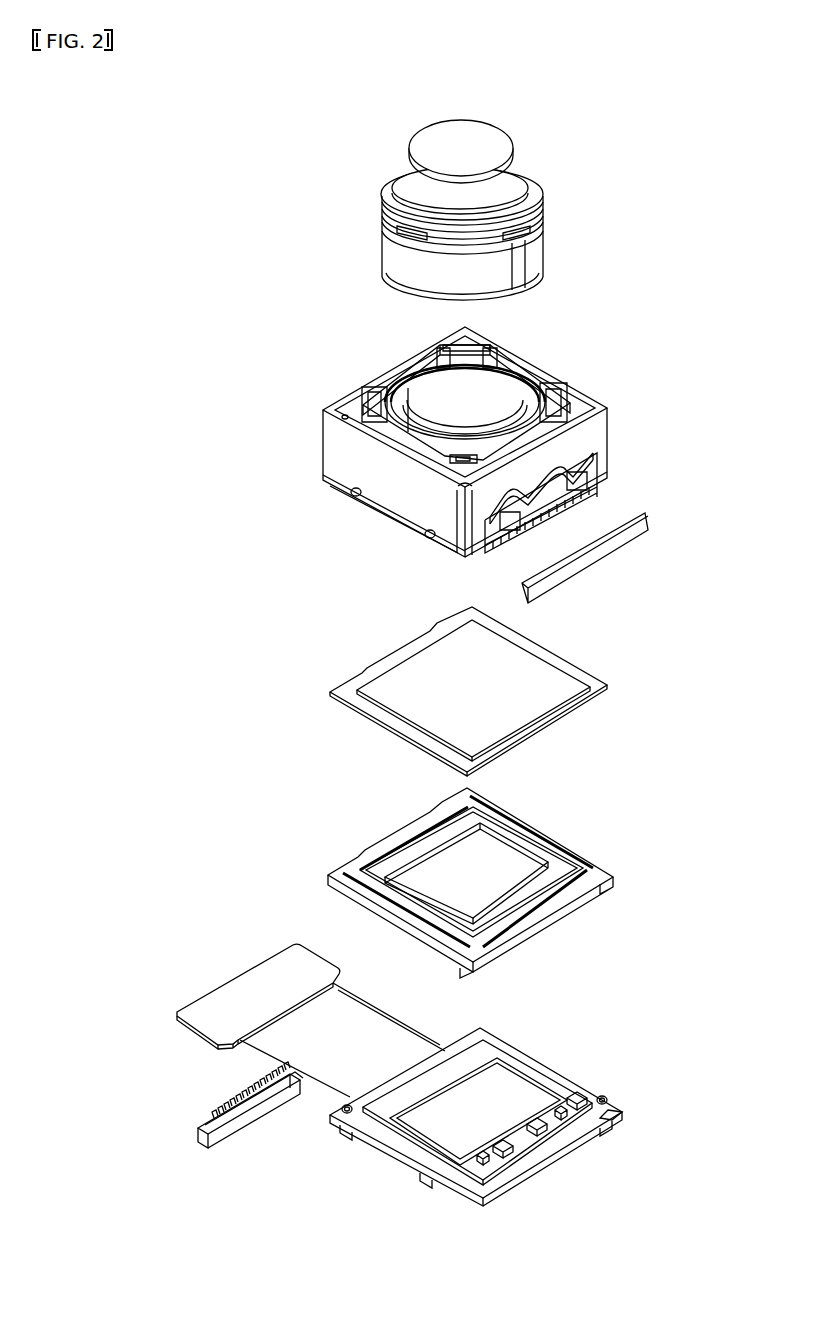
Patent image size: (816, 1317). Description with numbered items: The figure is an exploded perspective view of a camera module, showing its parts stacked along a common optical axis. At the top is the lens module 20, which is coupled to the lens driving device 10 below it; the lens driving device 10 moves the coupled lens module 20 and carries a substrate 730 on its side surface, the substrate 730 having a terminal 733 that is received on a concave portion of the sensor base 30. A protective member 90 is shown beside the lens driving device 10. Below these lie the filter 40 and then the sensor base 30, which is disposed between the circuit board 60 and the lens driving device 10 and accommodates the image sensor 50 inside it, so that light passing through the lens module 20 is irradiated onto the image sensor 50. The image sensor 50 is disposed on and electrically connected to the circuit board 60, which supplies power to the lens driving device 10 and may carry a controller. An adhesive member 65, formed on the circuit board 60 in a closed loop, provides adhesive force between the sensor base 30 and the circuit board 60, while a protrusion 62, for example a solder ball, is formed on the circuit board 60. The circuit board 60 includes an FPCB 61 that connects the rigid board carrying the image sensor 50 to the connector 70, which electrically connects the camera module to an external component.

The lens driving device 10 is at (465, 442).
The lens module 20 is at (540, 197).
The sensor base 30 is at (580, 840).
The filter 40 is at (592, 672).
The image sensor 50 is at (498, 1092).
The circuit board 60 is at (577, 1137).
The FPCB 61 is at (370, 1038).
The protrusion 62 is at (602, 1097).
The adhesive member 65 is at (617, 1102).
The connector 70 is at (260, 1127).
The protective member 90 is at (608, 543).
The substrate 730 is at (552, 488).
The terminal 733 is at (585, 500).